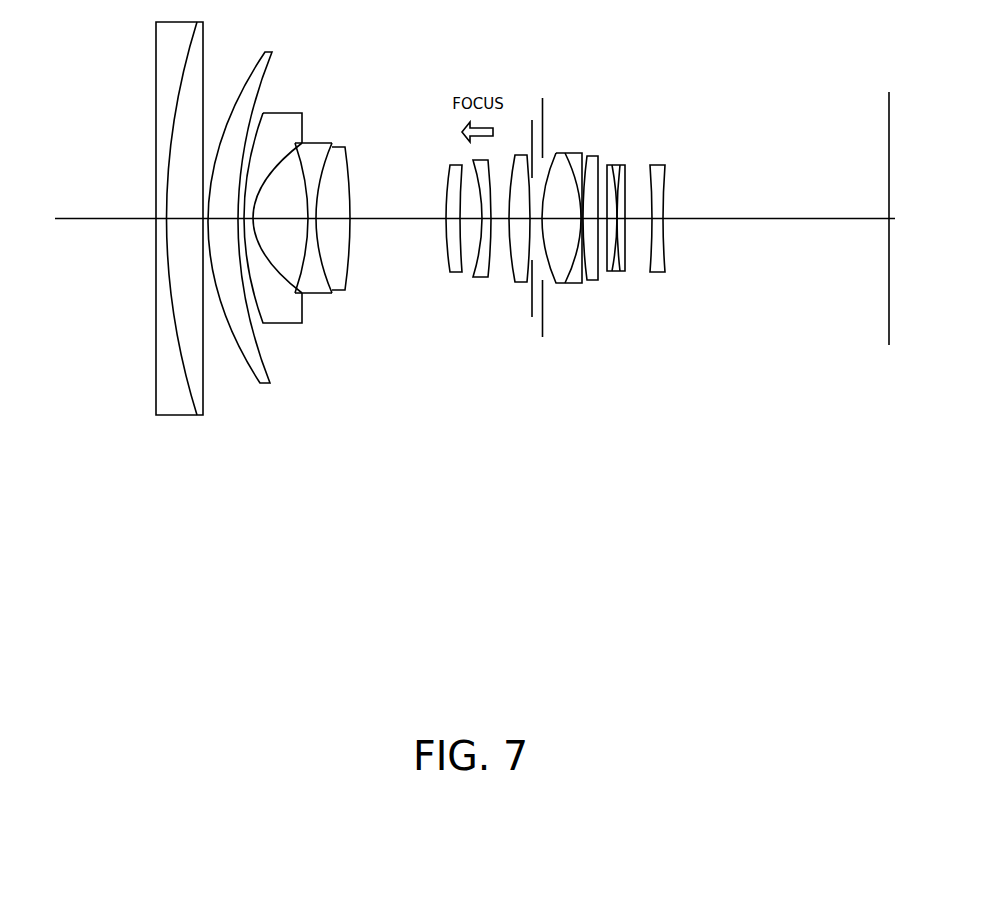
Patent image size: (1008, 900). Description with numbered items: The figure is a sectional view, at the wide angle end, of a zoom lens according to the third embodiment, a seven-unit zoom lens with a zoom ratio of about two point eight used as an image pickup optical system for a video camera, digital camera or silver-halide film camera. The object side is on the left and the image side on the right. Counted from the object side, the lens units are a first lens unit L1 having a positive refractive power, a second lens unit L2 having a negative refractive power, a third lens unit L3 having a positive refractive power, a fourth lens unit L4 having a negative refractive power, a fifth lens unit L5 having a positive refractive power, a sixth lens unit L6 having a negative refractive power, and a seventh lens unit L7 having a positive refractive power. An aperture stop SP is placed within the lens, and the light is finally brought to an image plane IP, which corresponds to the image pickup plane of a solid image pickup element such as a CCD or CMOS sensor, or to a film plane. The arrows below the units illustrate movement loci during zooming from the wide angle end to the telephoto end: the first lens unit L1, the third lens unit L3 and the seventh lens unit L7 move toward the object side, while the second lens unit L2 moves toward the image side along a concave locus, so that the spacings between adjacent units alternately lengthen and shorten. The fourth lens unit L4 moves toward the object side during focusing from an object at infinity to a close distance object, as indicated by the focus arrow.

The first lens unit L1 is at (70, 575).
The second lens unit L2 is at (265, 581).
The third lens unit L3 is at (380, 575).
The fourth lens unit L4 is at (464, 573).
The fifth lens unit L5 is at (486, 573).
The sixth lens unit L6 is at (582, 570).
The seventh lens unit L7 is at (594, 571).
The aperture stop SP is at (537, 110).
The image plane IP is at (887, 121).